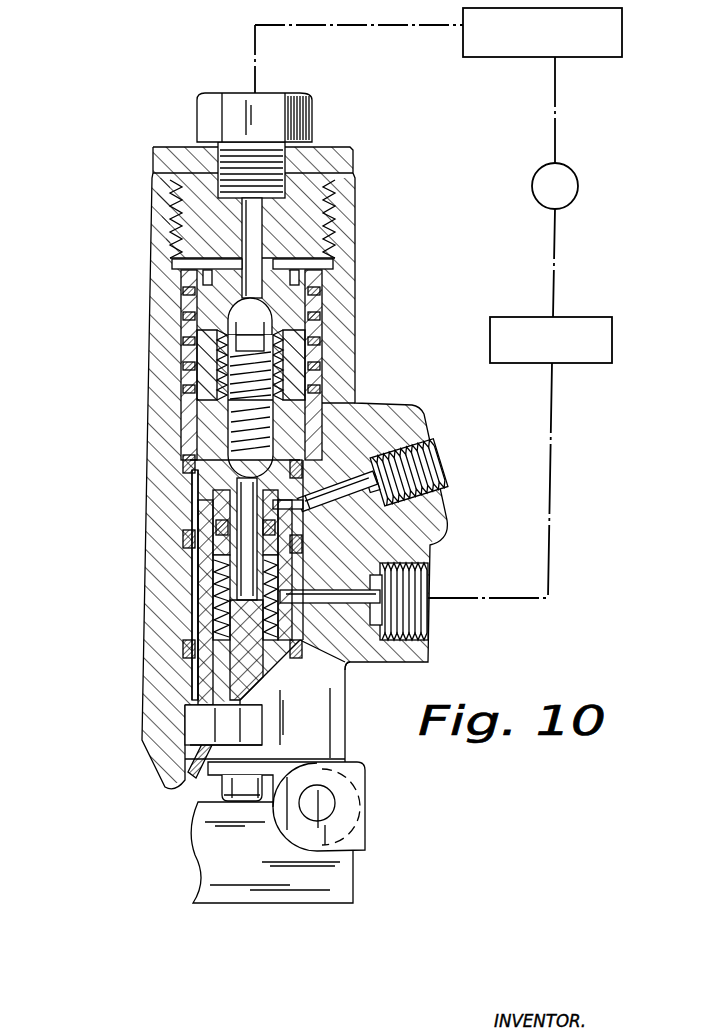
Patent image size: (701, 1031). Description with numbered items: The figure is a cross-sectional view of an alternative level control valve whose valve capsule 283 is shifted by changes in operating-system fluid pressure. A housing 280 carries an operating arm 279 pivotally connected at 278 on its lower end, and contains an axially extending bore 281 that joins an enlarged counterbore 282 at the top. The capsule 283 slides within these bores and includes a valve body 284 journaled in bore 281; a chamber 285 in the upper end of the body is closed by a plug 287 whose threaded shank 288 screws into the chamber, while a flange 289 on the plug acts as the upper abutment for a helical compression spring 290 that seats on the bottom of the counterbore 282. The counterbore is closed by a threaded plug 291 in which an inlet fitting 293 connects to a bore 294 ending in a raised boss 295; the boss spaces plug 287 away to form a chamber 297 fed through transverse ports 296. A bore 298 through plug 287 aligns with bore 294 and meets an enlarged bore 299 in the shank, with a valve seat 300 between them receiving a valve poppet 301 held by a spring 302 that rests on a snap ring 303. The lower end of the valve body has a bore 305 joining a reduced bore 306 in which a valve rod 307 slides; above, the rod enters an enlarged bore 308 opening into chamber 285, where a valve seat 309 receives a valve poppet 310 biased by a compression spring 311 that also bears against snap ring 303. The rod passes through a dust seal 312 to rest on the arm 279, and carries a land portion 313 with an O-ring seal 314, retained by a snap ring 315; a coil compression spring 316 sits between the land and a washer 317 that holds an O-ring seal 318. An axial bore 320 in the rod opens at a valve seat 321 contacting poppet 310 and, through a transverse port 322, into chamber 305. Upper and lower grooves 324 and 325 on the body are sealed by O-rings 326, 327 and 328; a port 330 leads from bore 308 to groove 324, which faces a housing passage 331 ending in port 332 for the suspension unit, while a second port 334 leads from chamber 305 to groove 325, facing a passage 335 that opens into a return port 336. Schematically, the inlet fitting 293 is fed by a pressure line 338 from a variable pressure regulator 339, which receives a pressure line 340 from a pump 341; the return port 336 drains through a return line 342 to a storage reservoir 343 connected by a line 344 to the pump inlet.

The pivot connection 278 is at (332, 812).
The operating arm 279 is at (212, 880).
The housing 280 is at (152, 232).
The bore 281 is at (178, 715).
The counterbore 282 is at (312, 372).
The valve capsule 283 is at (190, 601).
The valve body 284 is at (190, 672).
The chamber 285 is at (200, 411).
The plug 287 is at (322, 306).
The threaded shank 288 is at (205, 388).
The flange 289 is at (322, 282).
The helical compression spring 290 is at (318, 344).
The threaded plug 291 is at (348, 220).
The inlet fitting 293 is at (215, 112).
The bore 294 is at (250, 255).
The raised boss 295 is at (241, 264).
The transverse ports 296 is at (183, 268).
The chamber 297 is at (300, 277).
The bore 298 is at (275, 268).
The enlarged bore 299 is at (320, 390).
The valve seat 300 is at (213, 278).
The valve poppet 301 is at (186, 292).
The spring 302 is at (186, 341).
The snap ring 303 is at (186, 366).
The bore 305 is at (215, 625).
The reduced bore 306 is at (234, 514).
The valve rod 307 is at (255, 690).
The enlarged bore 308 is at (200, 480).
The valve seat 309 is at (296, 449).
The valve poppet 310 is at (232, 428).
The compression spring 311 is at (298, 424).
The dust seal 312 is at (170, 757).
The land portion 313 is at (280, 672).
The O-ring seal 314 is at (300, 655).
The snap ring 315 is at (215, 726).
The coil compression spring 316 is at (300, 612).
The washer 317 is at (200, 568).
The O-ring seal 318 is at (215, 545).
The bore 320 is at (290, 572).
The valve seat 321 is at (214, 490).
The transverse port 322 is at (196, 614).
The upper groove 324 is at (210, 505).
The lower groove 325 is at (190, 585).
The O-ring 326 is at (186, 462).
The O-ring 327 is at (302, 542).
The O-ring 328 is at (214, 645).
The port 330 is at (300, 507).
The passage 331 is at (370, 478).
The port 332 is at (426, 458).
The second port 334 is at (300, 594).
The passage 335 is at (370, 572).
The return port 336 is at (422, 583).
The pressure line 338 is at (378, 27).
The variable pressure regulator 339 is at (512, 60).
The pressure line 340 is at (553, 130).
The pump 341 is at (538, 200).
The return line 342 is at (549, 498).
The storage reservoir 343 is at (573, 363).
The line 344 is at (556, 250).